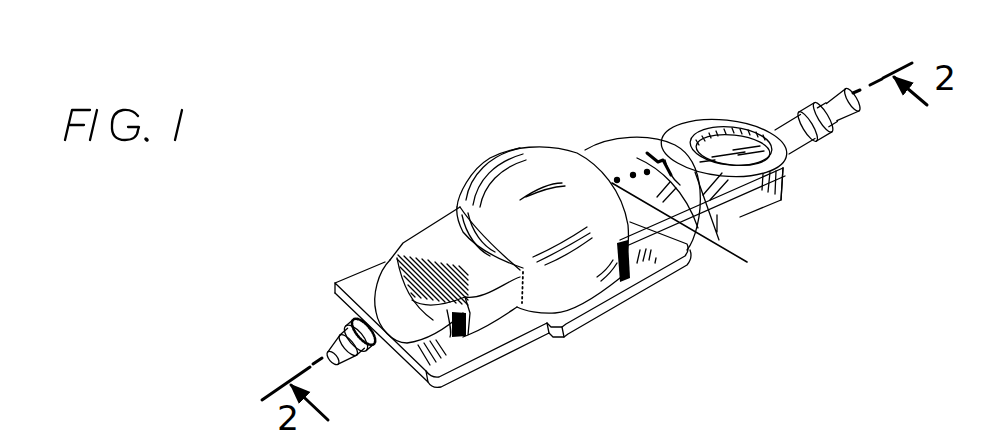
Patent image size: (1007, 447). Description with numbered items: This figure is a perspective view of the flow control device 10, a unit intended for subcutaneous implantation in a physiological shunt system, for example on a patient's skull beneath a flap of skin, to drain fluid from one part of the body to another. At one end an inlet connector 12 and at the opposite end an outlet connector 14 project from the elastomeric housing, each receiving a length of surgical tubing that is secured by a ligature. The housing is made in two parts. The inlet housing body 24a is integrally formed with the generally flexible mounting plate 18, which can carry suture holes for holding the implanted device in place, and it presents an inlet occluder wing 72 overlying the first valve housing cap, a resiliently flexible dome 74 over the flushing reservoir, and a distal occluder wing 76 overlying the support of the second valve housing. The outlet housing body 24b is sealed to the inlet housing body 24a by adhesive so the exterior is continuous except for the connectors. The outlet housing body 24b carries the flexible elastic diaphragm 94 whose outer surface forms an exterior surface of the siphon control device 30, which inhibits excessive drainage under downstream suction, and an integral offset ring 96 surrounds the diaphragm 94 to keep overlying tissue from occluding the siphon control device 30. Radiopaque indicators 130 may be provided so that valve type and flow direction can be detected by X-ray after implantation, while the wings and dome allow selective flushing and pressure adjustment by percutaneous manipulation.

The flow control device 10 is at (448, 162).
The inlet connector 12 is at (337, 336).
The outlet connector 14 is at (851, 121).
The mounting plate 18 is at (483, 360).
The inlet housing body 24a is at (403, 240).
The outlet housing body 24b is at (703, 118).
The siphon control device 30 is at (754, 211).
The inlet occluder wing 72 is at (431, 242).
The resiliently flexible dome 74 is at (525, 177).
The distal occluder wing 76 is at (613, 160).
The flexible elastic diaphragm 94 is at (735, 144).
The offset ring 96 is at (784, 158).
The radiopaque indicator 130 is at (709, 229).